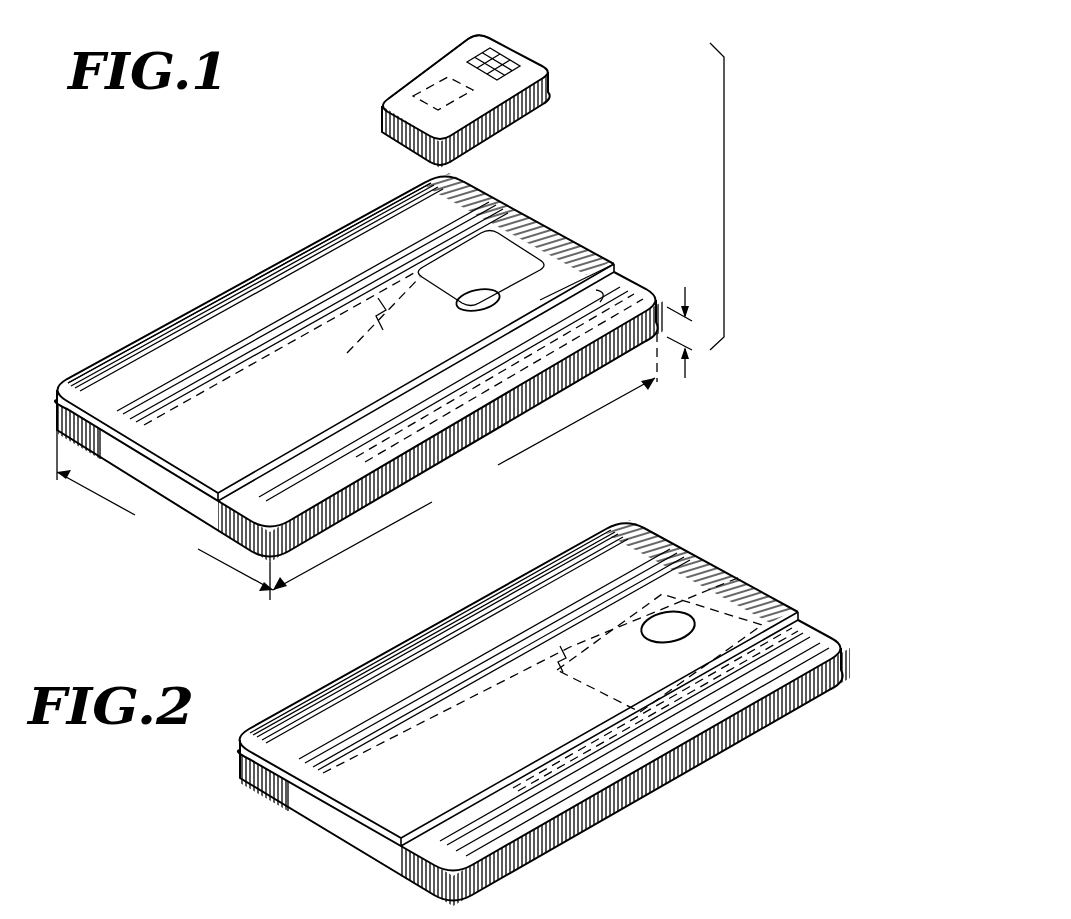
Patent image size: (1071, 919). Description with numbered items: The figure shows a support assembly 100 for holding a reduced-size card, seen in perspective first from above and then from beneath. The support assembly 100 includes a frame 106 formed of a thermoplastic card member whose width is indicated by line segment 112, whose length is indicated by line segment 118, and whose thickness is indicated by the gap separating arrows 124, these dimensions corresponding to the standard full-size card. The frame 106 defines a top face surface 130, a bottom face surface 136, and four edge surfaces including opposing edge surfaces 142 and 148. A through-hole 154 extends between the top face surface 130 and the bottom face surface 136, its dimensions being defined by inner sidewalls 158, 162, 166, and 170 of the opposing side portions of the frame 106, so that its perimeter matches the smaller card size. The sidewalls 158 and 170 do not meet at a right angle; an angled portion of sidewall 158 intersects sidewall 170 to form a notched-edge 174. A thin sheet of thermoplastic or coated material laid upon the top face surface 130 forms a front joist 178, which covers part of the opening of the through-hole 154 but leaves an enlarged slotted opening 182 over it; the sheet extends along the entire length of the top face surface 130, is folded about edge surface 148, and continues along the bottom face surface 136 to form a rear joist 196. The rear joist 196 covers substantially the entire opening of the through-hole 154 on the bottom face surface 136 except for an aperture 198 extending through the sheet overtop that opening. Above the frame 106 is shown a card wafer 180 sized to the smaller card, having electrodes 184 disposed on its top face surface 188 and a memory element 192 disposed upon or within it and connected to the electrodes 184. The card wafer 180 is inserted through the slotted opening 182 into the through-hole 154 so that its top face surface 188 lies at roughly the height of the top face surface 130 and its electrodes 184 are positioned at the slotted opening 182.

In FIG. 1, the support assembly 100 is at (202, 145).
In FIG. 2, the support assembly 100 is at (156, 780).
In FIG. 1, the frame 106 is at (191, 312).
In FIG. 2, the frame 106 is at (564, 734).
In FIG. 1, the line segment 112 is at (165, 510).
In FIG. 1, the line segment 118 is at (463, 466).
In FIG. 1, the arrows 124 is at (477, 394).
In FIG. 1, the top face surface 130 is at (270, 295).
In FIG. 1, the bottom face surface 136 is at (330, 514).
In FIG. 2, the bottom face surface 136 is at (280, 735).
In FIG. 1, the edge surface 142 is at (56, 416).
In FIG. 2, the edge surface 142 is at (300, 788).
In FIG. 1, the edge surface 148 is at (636, 279).
In FIG. 1, the through-hole 154 is at (484, 268).
In FIG. 2, the through-hole 154 is at (562, 569).
In FIG. 1, the inner sidewall 158 is at (450, 265).
In FIG. 1, the inner sidewall 162 is at (552, 268).
In FIG. 1, the inner sidewall 166 is at (512, 262).
In FIG. 1, the inner sidewall 170 is at (372, 348).
In FIG. 1, the notched-edge 174 is at (320, 244).
In FIG. 1, the front joist 178 is at (190, 386).
In FIG. 1, the card wafer 180 is at (388, 100).
In FIG. 1, the slotted opening 182 is at (527, 254).
In FIG. 1, the electrodes 184 is at (514, 60).
In FIG. 1, the top face surface 188 is at (452, 60).
In FIG. 1, the memory element 192 is at (488, 100).
In FIG. 2, the rear joist 196 is at (676, 600).
In FIG. 2, the aperture 198 is at (692, 620).